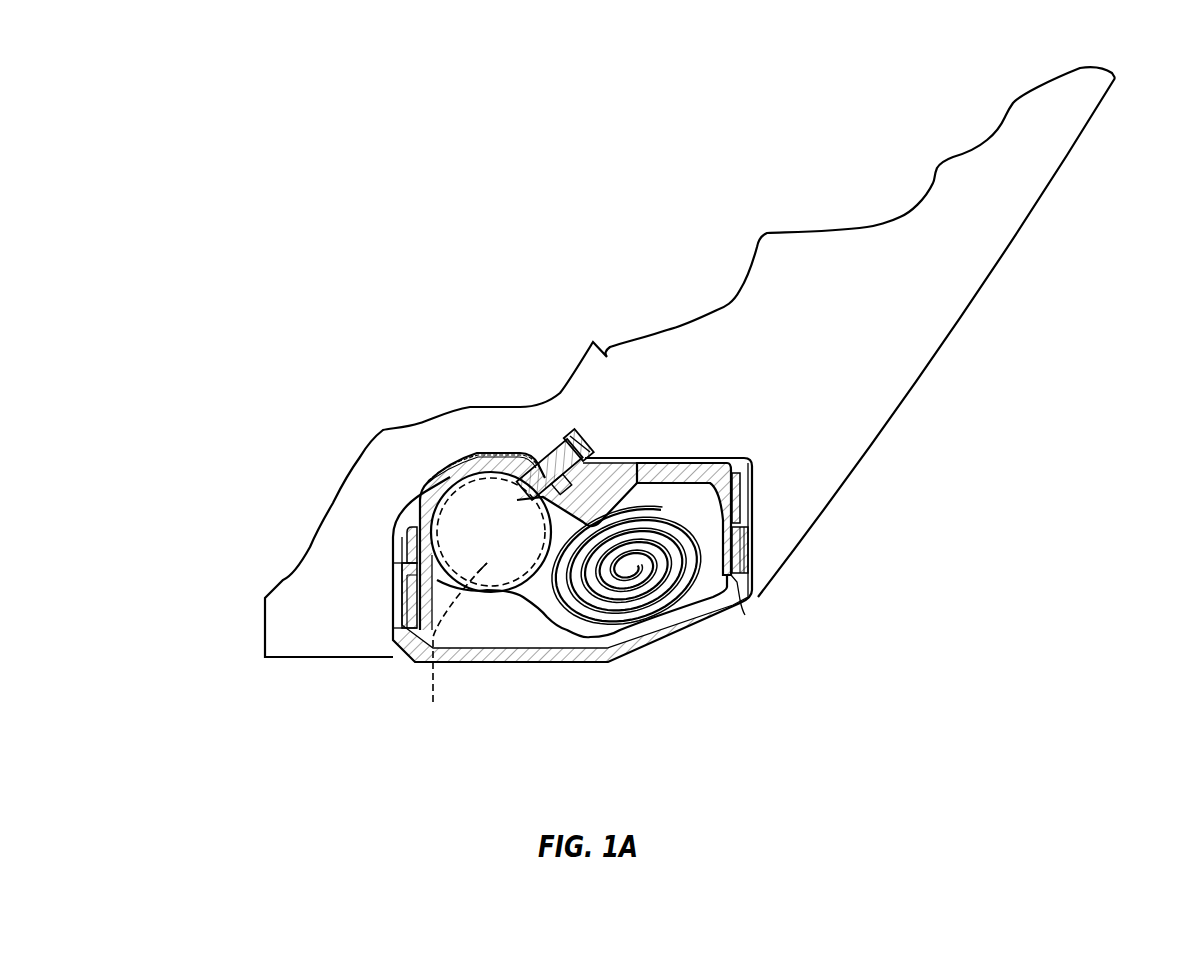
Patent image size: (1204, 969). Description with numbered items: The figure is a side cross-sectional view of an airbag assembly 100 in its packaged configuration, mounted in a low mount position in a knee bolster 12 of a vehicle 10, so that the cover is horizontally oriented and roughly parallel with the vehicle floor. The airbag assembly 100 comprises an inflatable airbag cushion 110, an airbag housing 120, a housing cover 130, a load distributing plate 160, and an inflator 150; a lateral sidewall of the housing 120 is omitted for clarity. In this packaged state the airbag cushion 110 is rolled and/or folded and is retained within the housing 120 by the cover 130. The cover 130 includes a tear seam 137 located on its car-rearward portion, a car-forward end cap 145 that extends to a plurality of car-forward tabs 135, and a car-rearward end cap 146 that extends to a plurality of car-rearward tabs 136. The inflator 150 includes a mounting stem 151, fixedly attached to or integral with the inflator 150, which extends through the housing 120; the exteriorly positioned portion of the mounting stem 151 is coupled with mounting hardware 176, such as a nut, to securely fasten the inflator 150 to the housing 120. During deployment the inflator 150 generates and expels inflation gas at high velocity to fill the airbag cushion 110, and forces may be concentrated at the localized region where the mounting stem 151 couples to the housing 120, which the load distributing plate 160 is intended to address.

The vehicle 10 is at (791, 196).
The knee bolster 12 is at (1020, 180).
The airbag assembly 100 is at (491, 430).
The inflatable airbag cushion 110 is at (636, 597).
The airbag housing 120 is at (437, 478).
The housing cover 130 is at (570, 663).
The car-forward tabs 135 is at (408, 547).
The car-rearward tabs 136 is at (738, 500).
The tear seam 137 is at (745, 615).
The car-forward end cap 145 is at (413, 637).
The car-rearward end cap 146 is at (738, 555).
The inflator 150 is at (479, 605).
The mounting stem 151 is at (583, 444).
The load distributing plate 160 is at (514, 455).
The mounting hardware 176 is at (543, 447).